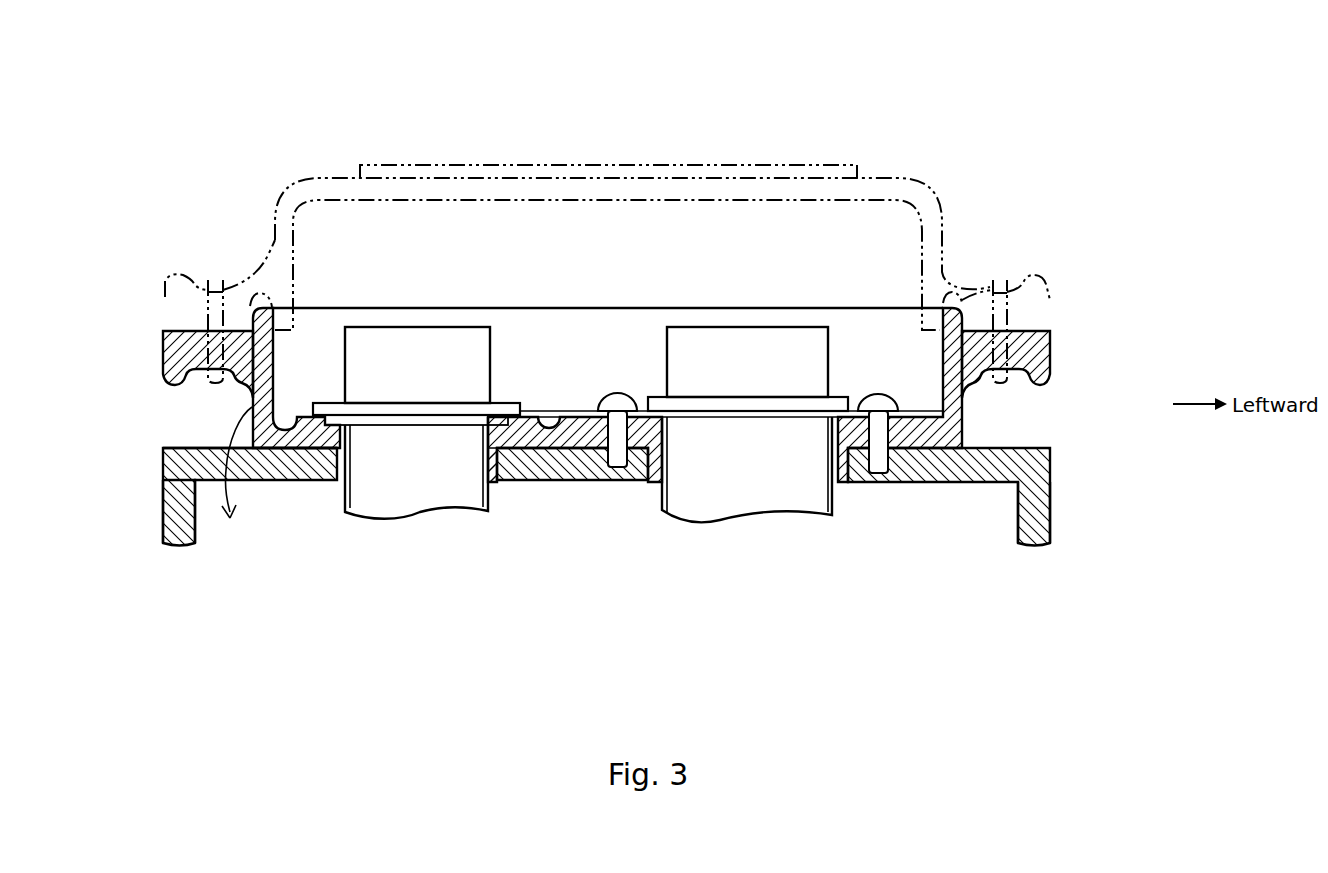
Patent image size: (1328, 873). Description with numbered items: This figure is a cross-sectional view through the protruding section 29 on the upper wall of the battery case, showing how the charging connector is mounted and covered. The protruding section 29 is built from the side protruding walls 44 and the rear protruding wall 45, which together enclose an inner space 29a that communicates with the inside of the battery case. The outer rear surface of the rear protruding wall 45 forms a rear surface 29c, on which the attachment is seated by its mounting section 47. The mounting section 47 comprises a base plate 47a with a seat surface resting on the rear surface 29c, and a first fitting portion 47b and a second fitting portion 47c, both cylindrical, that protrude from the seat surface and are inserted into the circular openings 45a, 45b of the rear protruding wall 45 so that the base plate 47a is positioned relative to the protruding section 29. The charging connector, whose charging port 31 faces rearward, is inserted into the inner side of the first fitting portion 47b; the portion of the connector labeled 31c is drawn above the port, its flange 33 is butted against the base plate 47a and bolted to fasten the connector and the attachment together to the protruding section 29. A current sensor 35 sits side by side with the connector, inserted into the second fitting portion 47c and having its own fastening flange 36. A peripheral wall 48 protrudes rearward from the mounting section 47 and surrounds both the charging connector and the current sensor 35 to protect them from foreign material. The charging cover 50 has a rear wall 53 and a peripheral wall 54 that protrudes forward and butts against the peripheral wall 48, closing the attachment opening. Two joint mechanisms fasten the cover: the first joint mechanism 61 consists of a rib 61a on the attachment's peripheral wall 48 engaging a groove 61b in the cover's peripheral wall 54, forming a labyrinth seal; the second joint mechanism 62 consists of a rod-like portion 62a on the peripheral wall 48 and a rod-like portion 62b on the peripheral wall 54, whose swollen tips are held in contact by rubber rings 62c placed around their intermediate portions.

The protruding section 29 is at (163, 472).
The inner space 29a is at (200, 448).
The rear surface 29c is at (1040, 447).
The charging port 31 is at (748, 503).
The pipe connector 31c is at (768, 325).
The flange 33 is at (702, 416).
The current sensor 35 is at (460, 358).
The flange 36 is at (512, 402).
The side protruding walls 44 is at (180, 503).
The rear protruding wall 45 is at (283, 465).
The circular opening 45a is at (652, 481).
The circular opening 45b is at (343, 485).
The mounting section 47 is at (918, 437).
The base plate 47a is at (570, 438).
The first fitting portion 47b is at (848, 468).
The second fitting portion 47c is at (518, 483).
The peripheral wall 48 is at (260, 425).
The charging cover 50 is at (320, 176).
The rear wall 53 is at (882, 192).
The peripheral wall 54 is at (270, 232).
The first joint mechanism 61 is at (960, 286).
The rib 61a is at (943, 322).
The groove 61b is at (957, 290).
The second joint mechanism 62 is at (222, 278).
The rod-like portion 62a is at (173, 350).
The rod-like portion 62b is at (165, 297).
The rubber rings 62c is at (215, 276).